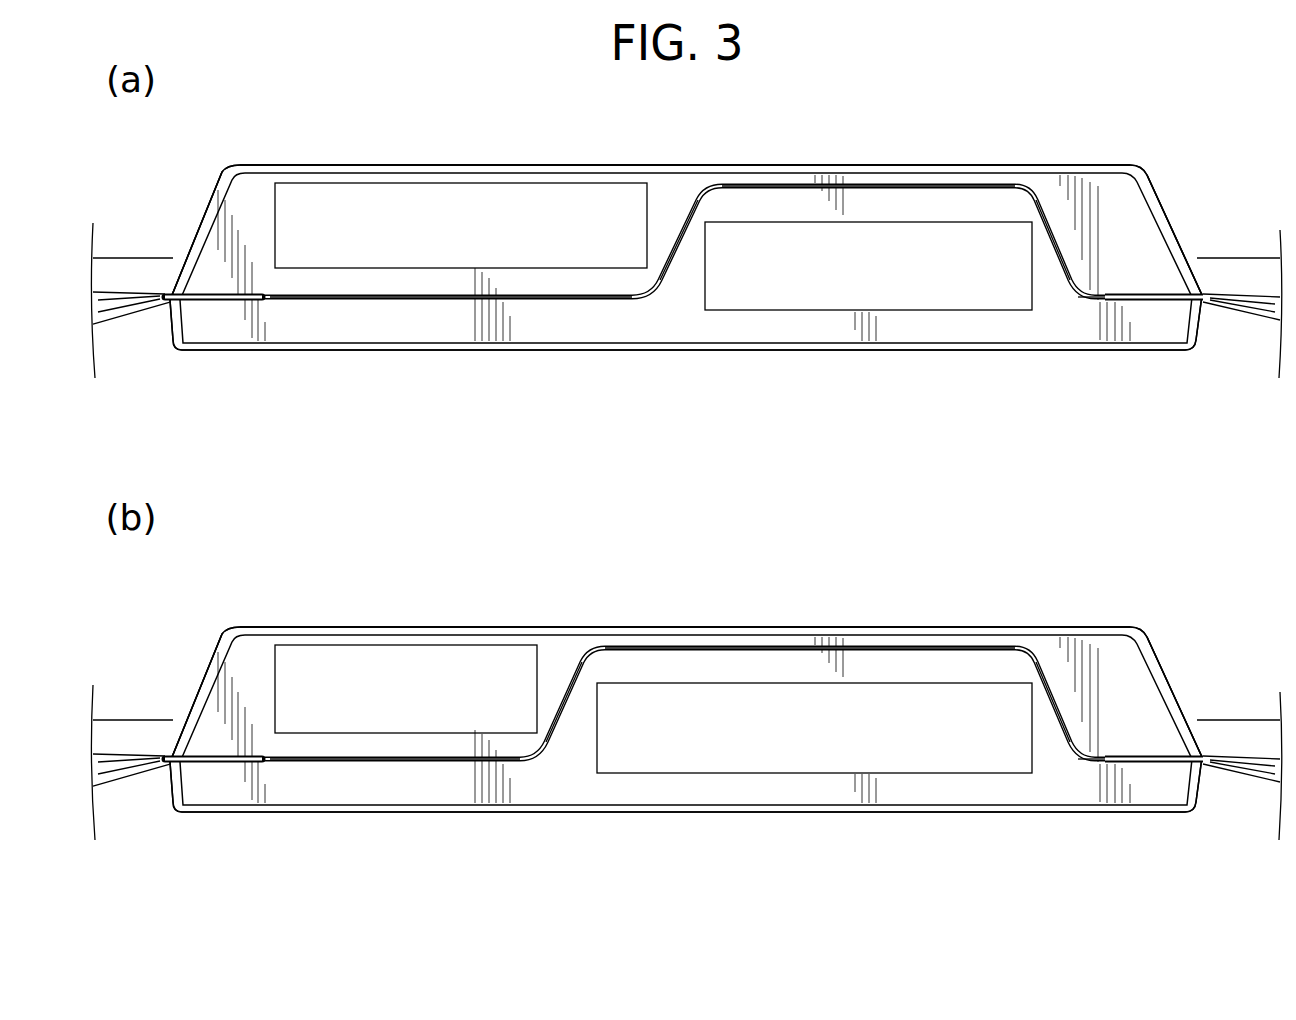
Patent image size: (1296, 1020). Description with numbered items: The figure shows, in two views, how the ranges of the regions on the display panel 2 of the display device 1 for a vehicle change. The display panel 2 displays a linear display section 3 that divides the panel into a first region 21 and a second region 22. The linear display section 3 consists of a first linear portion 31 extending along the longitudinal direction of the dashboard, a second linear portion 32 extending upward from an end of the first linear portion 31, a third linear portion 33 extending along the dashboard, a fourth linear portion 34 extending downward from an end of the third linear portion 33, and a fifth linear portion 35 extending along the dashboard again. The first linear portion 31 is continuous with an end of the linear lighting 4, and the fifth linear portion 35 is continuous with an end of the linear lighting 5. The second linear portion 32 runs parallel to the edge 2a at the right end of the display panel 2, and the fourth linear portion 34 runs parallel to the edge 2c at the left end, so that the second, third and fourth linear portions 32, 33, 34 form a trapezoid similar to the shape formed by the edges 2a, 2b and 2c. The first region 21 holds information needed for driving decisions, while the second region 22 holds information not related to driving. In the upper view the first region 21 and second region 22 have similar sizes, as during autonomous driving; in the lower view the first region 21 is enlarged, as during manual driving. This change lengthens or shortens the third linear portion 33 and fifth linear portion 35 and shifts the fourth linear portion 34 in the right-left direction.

The display device 1 is at (1070, 113).
The display panel 2 is at (378, 165).
The edge 2a is at (1175, 213).
The edge 2b is at (767, 164).
The edge 2c is at (198, 212).
The linear display section 3 is at (688, 211).
The first linear portion 31 is at (1102, 296).
The second linear portion 32 is at (1050, 228).
The third linear portion 33 is at (859, 184).
The fourth linear portion 34 is at (677, 237).
The fifth linear portion 35 is at (540, 295).
The linear lighting 4 is at (1172, 306).
The linear lighting 5 is at (203, 308).
The first region 21 is at (885, 272).
The second region 22 is at (460, 242).